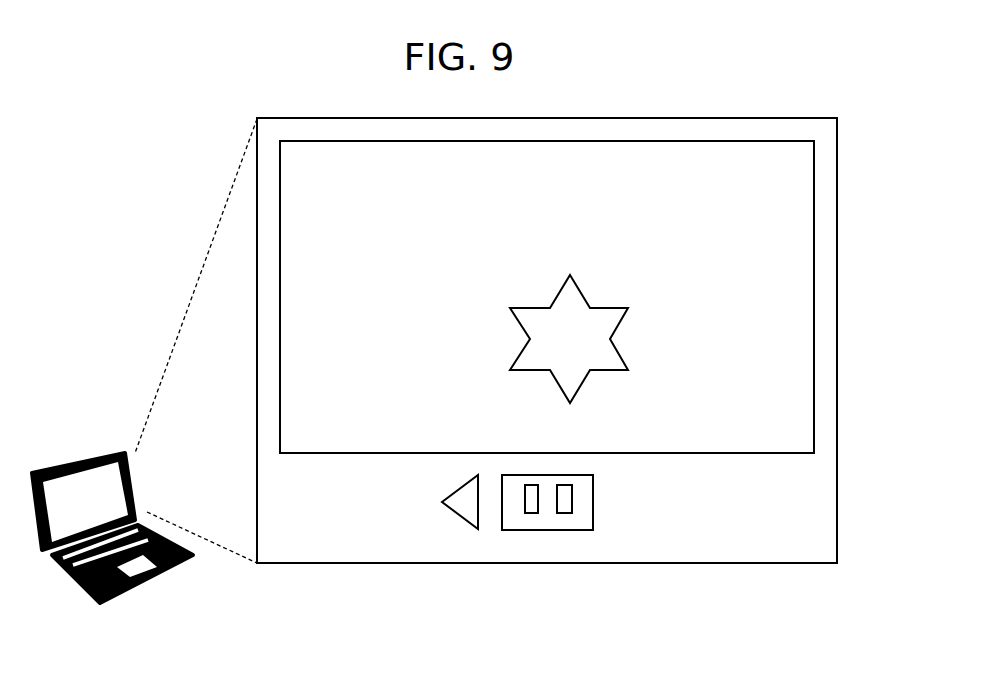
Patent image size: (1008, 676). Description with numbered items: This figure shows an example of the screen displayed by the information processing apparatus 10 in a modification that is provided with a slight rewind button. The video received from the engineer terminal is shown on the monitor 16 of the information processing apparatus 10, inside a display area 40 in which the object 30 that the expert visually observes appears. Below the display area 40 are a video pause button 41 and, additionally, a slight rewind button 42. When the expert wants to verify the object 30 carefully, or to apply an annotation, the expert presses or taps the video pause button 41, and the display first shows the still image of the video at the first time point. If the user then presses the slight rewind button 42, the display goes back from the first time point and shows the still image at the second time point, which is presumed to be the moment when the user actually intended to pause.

The information processing apparatus 10 is at (110, 453).
The monitor 16 is at (837, 163).
The display area 40 is at (814, 273).
The object 30 is at (587, 300).
The video pause button 41 is at (553, 530).
The slight rewind button 42 is at (455, 513).